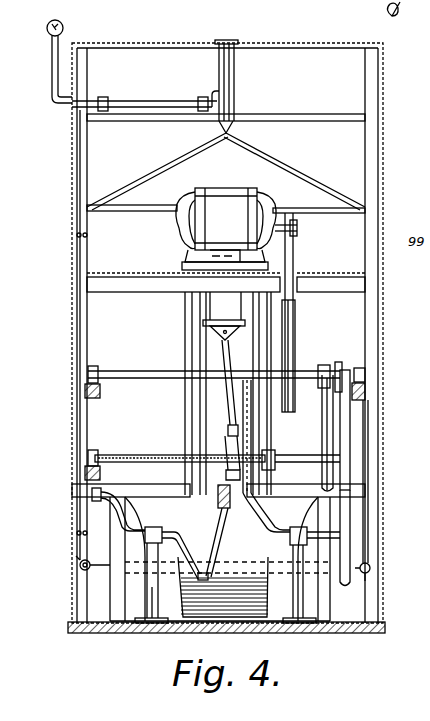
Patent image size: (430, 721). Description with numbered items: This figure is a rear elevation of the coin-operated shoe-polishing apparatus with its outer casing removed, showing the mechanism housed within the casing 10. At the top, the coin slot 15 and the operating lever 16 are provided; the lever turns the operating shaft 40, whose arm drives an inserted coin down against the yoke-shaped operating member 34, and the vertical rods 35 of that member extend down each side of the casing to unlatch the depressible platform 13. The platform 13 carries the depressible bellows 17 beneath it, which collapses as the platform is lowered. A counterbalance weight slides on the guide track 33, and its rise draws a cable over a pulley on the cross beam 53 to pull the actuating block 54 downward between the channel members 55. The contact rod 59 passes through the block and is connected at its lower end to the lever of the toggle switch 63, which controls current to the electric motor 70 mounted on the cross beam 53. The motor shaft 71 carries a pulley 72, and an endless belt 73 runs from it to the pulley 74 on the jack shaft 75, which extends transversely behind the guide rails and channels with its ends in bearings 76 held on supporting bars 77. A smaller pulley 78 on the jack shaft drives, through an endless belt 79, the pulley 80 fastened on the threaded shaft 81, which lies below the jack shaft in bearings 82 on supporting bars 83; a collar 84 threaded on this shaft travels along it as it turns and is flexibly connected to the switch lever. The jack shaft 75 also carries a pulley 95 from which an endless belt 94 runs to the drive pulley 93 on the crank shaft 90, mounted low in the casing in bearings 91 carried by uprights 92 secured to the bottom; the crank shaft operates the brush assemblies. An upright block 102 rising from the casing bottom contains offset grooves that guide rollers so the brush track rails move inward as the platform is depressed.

The casing 10 is at (149, 42).
The depressible platform 13 is at (76, 572).
The coin slot 15 is at (232, 40).
The operating lever 16 is at (52, 62).
The bellows 17 is at (248, 609).
The guide track 33 is at (185, 308).
The yoke-shaped operating member 34 is at (162, 162).
The vertical rods 35 is at (74, 426).
The operating shaft 40 is at (140, 103).
The cross beam 53 is at (150, 284).
The actuating block 54 is at (206, 401).
The channel members 55 is at (198, 332).
The contact rod 59 is at (206, 422).
The toggle switch 63 is at (220, 512).
The electric motor 70 is at (232, 196).
The motor shaft 71 is at (302, 227).
The pulley 72 is at (306, 208).
The endless belt 73 is at (293, 258).
The pulley 74 is at (292, 346).
The jack shaft 75 is at (158, 374).
The bearings 76 is at (93, 366).
The supporting bars 77 is at (100, 391).
The smaller pulley 78 is at (310, 366).
The endless belt 79 is at (323, 421).
The pulley 80 is at (322, 445).
The threaded shaft 81 is at (141, 454).
The bearings 82 is at (94, 449).
The supporting bars 83 is at (85, 471).
The collar 84 is at (268, 468).
The crank shaft 90 is at (223, 548).
The bearings 91 is at (154, 530).
The uprights 92 is at (150, 582).
The drive pulley 93 is at (349, 523).
The endless belt 94 is at (350, 436).
The pulley 95 is at (358, 365).
The upright block 102 is at (81, 560).